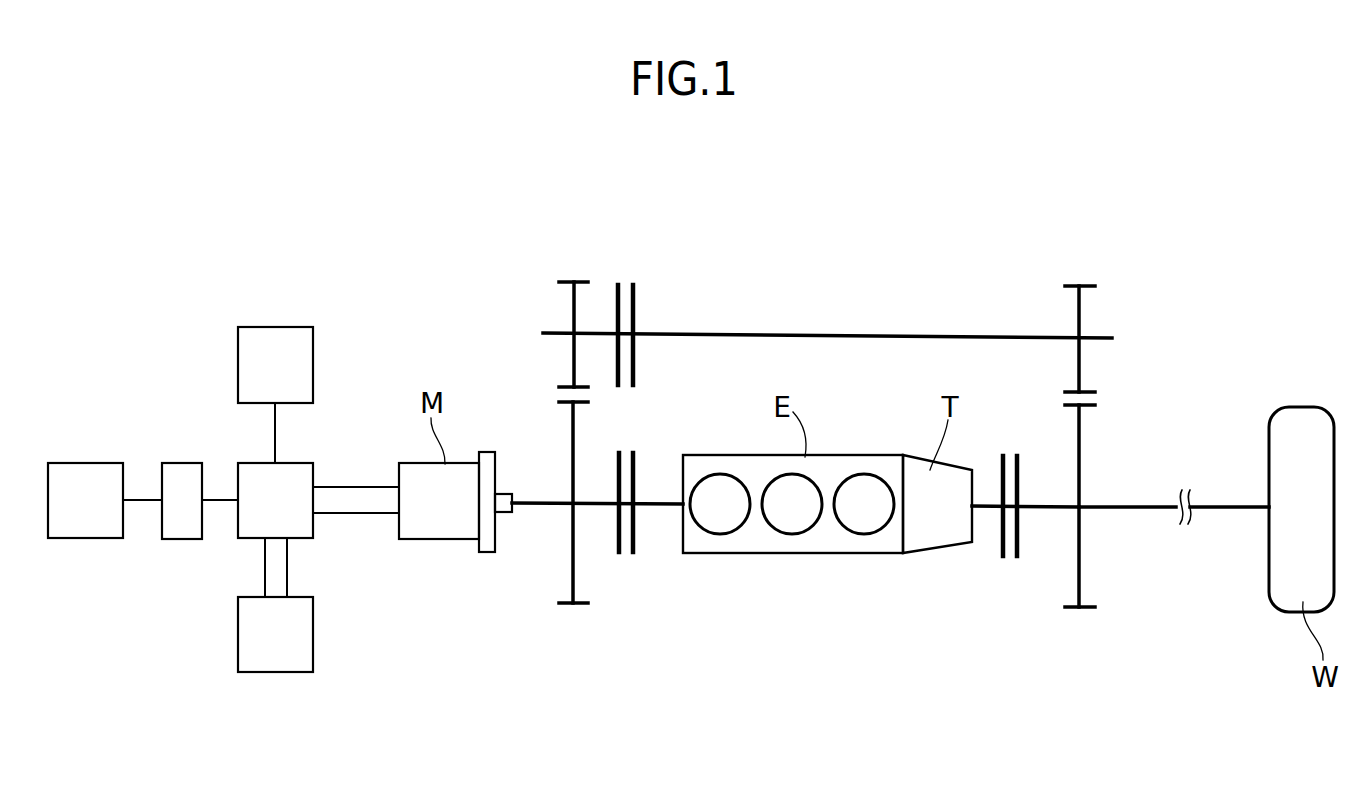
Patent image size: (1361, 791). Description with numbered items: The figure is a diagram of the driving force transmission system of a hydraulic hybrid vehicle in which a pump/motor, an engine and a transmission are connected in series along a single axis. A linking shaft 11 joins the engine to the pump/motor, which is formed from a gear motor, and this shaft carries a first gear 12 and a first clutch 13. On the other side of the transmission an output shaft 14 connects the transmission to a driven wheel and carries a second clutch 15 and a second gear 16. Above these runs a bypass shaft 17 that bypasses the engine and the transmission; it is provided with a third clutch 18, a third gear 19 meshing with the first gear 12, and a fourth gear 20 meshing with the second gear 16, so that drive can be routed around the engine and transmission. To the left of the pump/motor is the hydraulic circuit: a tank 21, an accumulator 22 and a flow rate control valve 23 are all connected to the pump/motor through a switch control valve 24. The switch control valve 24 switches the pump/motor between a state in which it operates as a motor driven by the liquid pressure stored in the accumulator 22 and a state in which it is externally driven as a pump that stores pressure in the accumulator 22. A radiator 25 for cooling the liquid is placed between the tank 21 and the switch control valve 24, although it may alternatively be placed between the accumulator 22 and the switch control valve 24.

The linking shaft 11 is at (537, 507).
The first gear 12 is at (563, 403).
The first clutch 13 is at (635, 457).
The output shaft 14 is at (1125, 510).
The second clutch 15 is at (1020, 548).
The second gear 16 is at (1088, 410).
The bypass shaft 17 is at (862, 335).
The third clutch 18 is at (635, 292).
The third gear 19 is at (563, 279).
The fourth gear 20 is at (1092, 284).
The tank 21 is at (72, 514).
The accumulator 22 is at (262, 378).
The flow rate control valve 23 is at (262, 648).
The switch control valve 24 is at (262, 514).
The radiator 25 is at (179, 462).